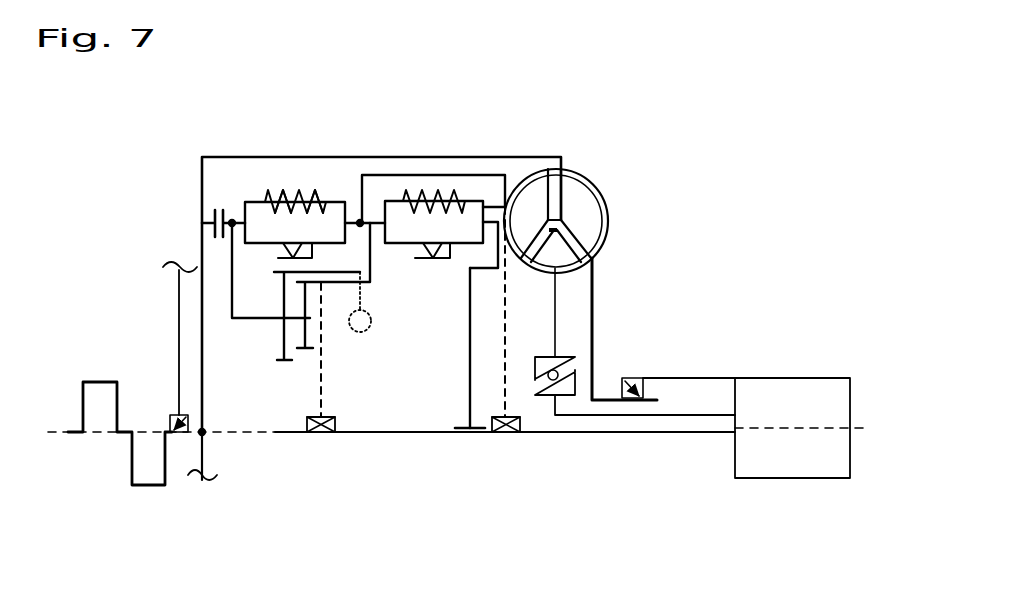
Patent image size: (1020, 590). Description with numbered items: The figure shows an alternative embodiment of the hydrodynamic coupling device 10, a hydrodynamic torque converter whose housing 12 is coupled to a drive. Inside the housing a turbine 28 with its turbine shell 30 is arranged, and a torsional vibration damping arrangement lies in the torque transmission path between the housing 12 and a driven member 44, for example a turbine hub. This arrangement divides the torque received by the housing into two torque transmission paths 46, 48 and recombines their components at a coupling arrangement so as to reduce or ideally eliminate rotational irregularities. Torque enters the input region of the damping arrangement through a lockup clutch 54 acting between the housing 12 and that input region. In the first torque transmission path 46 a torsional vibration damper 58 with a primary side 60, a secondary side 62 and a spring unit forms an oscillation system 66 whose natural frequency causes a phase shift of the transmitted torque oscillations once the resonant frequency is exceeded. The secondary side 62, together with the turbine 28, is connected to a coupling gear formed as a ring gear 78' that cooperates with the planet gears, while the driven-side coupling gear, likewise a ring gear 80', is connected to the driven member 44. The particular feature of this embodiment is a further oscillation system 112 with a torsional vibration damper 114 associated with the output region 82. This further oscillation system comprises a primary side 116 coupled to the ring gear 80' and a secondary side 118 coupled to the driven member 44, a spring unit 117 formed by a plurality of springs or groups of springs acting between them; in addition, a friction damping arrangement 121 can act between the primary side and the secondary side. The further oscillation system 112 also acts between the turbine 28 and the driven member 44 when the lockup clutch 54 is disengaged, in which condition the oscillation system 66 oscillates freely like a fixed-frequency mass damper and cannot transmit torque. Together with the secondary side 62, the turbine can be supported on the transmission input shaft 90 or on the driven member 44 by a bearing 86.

The hydrodynamic coupling device 10 is at (615, 126).
The housing 12 is at (548, 156).
The turbine 28 is at (542, 175).
The turbine shell 30 is at (500, 172).
The driven member 44 is at (478, 433).
The first torque transmission path 46 is at (259, 174).
The second torque transmission path 48 is at (224, 307).
The lockup clutch 54 is at (215, 210).
The torsional vibration damper 58 is at (285, 174).
The primary side 60 is at (245, 202).
The secondary side 62 is at (344, 202).
The oscillation system 66 is at (327, 174).
The ring gear 78' is at (246, 284).
The ring gear 80' is at (343, 361).
The output region 82 is at (404, 314).
The bearing 86 is at (525, 425).
The transmission input shaft 90 is at (706, 413).
The further oscillation system 112 is at (467, 134).
The torsional vibration damper 114 is at (428, 176).
The primary side 116 is at (385, 207).
The spring unit 117 is at (548, 236).
The secondary side 118 is at (513, 205).
The friction damping arrangement 121 is at (442, 262).